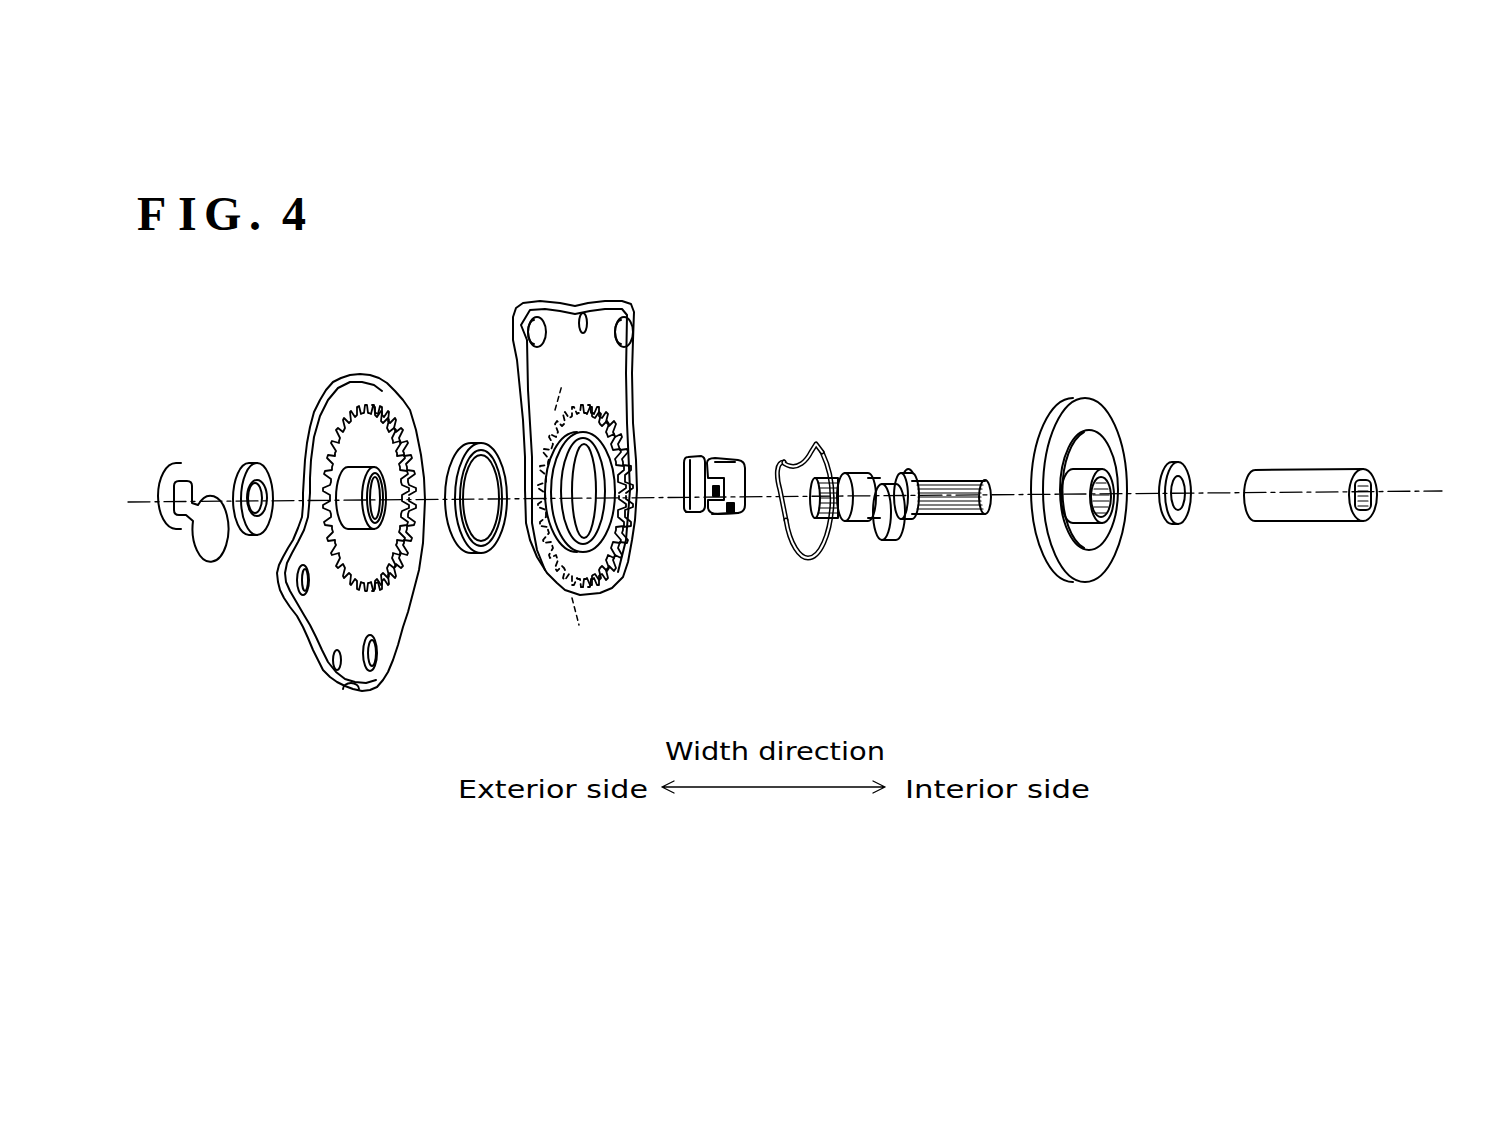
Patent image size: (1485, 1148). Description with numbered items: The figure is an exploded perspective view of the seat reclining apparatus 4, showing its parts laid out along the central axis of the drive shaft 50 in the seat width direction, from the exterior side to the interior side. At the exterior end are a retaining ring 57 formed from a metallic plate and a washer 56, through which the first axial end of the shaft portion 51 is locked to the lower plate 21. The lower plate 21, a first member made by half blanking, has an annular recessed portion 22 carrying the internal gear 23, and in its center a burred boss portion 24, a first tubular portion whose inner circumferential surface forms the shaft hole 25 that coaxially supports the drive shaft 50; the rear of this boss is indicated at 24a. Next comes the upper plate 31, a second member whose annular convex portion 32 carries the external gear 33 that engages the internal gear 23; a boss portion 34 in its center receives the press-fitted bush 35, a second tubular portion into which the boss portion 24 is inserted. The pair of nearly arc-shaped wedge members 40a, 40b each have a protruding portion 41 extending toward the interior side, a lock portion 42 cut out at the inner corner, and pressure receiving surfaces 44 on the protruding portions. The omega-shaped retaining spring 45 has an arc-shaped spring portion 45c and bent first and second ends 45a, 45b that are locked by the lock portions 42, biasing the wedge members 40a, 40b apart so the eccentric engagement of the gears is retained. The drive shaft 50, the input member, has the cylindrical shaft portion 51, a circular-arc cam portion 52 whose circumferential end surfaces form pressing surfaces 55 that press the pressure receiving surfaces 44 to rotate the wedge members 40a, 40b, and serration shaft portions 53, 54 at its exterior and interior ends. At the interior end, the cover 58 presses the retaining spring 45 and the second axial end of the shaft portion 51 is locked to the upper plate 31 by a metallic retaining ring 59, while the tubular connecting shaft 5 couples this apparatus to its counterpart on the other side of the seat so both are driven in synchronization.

The seat reclining apparatus 4 is at (1077, 300).
The connecting shaft 5 is at (1299, 478).
The lower plate 21 is at (349, 674).
The recessed portion 22 is at (368, 437).
The internal gear 23 is at (397, 568).
The boss portion 24 is at (335, 500).
The boss rear portion 24a is at (352, 516).
The shaft hole 25 is at (383, 470).
The upper plate 31 is at (618, 372).
The convex portion 32 is at (564, 379).
The external gear 33 is at (574, 623).
The boss portion 34 is at (596, 528).
The bush 35 is at (473, 556).
The wedge member 40a is at (700, 480).
The wedge member 40b is at (735, 470).
The protruding portion 41 is at (716, 521).
The lock portion 42 is at (730, 465).
The pressure receiving surface 44 is at (697, 514).
The retaining spring 45 is at (804, 502).
The first end 45a is at (781, 522).
The second end 45b is at (805, 456).
The spring portion 45c is at (825, 538).
The drive shaft 50 is at (900, 476).
The shaft portion 51 is at (876, 474).
The cam portion 52 is at (902, 540).
The serration shaft portion 53 is at (822, 480).
The serration shaft portion 54 is at (960, 488).
The pressing surface 55 is at (900, 474).
The washer 56 is at (256, 463).
The retaining ring 57 is at (183, 463).
The cover 58 is at (1098, 418).
The retaining ring 59 is at (1178, 470).